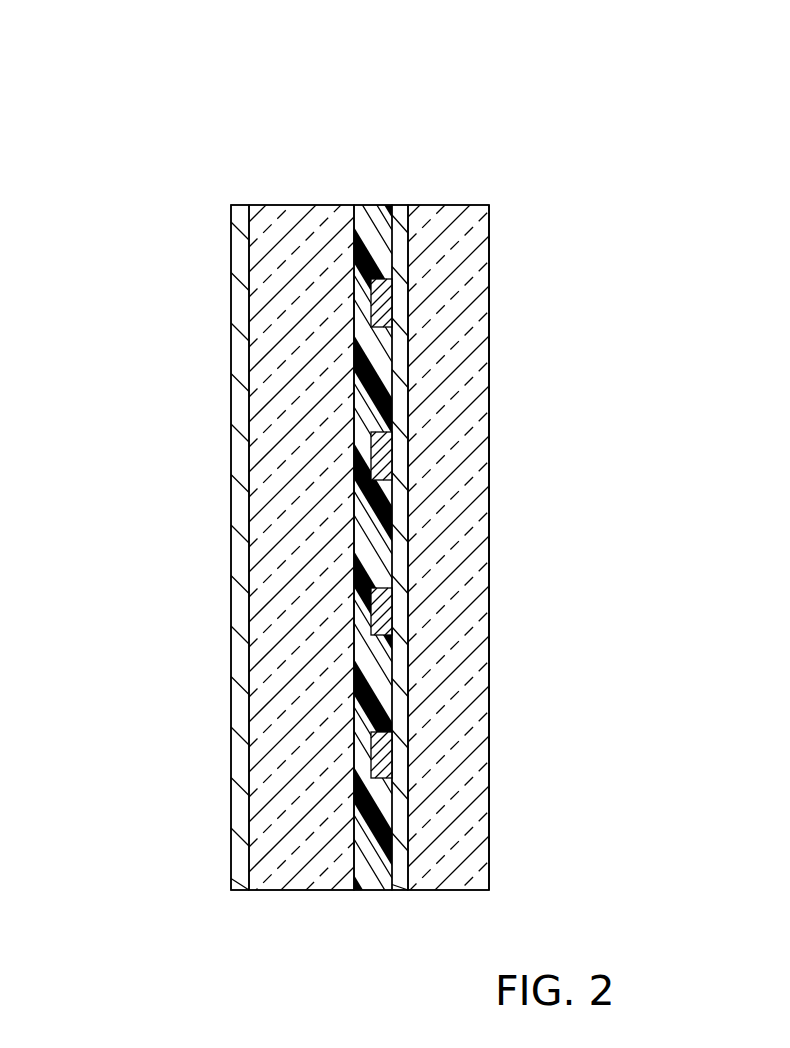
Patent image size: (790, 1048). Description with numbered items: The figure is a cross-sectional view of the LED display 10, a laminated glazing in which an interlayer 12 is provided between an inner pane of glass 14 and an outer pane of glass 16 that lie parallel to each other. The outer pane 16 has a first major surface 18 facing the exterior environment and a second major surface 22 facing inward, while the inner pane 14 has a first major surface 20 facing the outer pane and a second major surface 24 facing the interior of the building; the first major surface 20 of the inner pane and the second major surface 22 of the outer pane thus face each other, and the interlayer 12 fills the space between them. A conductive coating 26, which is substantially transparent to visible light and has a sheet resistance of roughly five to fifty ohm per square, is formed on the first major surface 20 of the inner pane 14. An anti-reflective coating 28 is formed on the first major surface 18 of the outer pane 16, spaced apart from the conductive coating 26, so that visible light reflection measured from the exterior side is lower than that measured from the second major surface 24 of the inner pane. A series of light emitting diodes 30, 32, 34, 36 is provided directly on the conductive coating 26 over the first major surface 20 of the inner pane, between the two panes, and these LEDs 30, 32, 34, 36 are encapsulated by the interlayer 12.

The LED display 10 is at (108, 88).
The interlayer 12 is at (370, 204).
The inner pane of glass 14 is at (453, 204).
The outer pane of glass 16 is at (303, 204).
The first major surface of the outer pane 18 is at (247, 387).
The first major surface of the inner pane 20 is at (408, 548).
The second major surface of the outer pane 22 is at (353, 712).
The second major surface of the inner pane 24 is at (490, 333).
The conductive coating 26 is at (397, 204).
The anti-reflective coating 28 is at (232, 840).
The light emitting diode 30 is at (384, 309).
The light emitting diode 32 is at (384, 468).
The light emitting diode 34 is at (393, 612).
The light emitting diode 36 is at (393, 762).